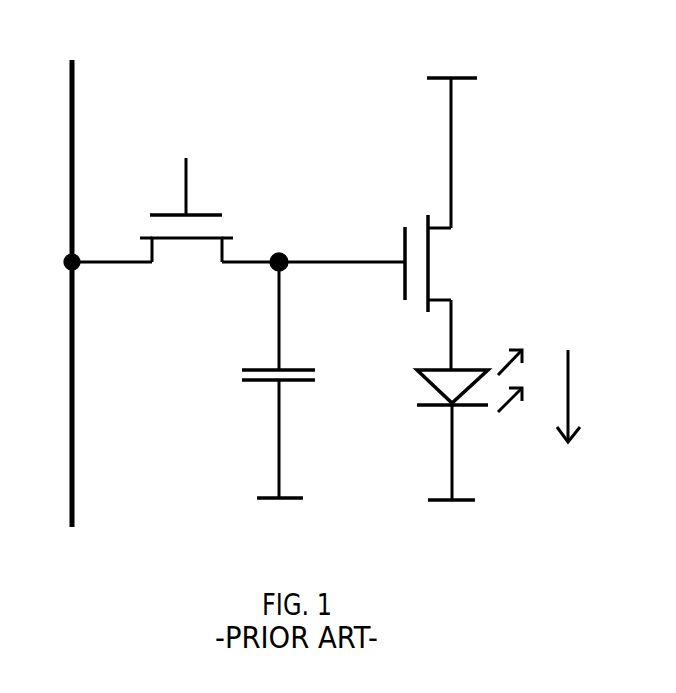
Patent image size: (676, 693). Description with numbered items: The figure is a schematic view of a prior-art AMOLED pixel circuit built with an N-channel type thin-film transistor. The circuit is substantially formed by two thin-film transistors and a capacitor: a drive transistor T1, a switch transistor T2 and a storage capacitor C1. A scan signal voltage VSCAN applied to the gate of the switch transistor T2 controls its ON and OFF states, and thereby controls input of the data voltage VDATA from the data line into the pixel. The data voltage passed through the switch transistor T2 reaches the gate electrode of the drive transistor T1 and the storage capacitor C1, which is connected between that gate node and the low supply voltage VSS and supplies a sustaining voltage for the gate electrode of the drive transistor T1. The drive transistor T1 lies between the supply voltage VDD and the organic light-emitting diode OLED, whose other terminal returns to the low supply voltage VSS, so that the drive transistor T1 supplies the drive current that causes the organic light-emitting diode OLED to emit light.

The data voltage VDATA is at (64, 272).
The scan signal voltage VSCAN is at (193, 163).
The switch transistor T2 is at (234, 262).
The storage capacitor C1 is at (255, 380).
The supply voltage VDD is at (453, 128).
The drive transistor T1 is at (441, 292).
The organic light-emitting diode OLED is at (466, 425).
The low supply voltage VSS is at (374, 521).